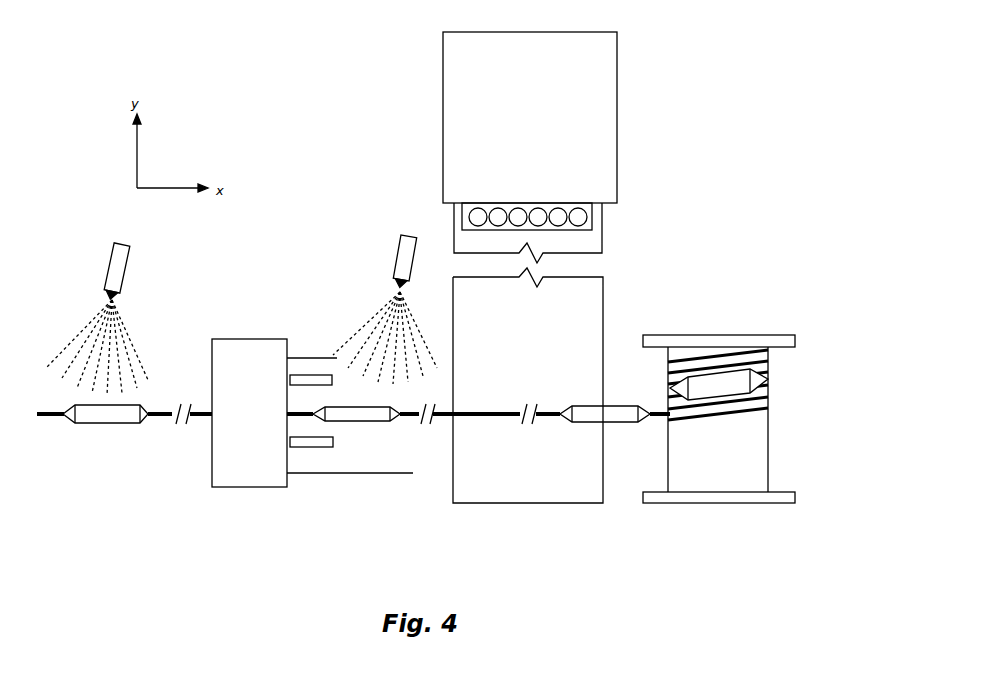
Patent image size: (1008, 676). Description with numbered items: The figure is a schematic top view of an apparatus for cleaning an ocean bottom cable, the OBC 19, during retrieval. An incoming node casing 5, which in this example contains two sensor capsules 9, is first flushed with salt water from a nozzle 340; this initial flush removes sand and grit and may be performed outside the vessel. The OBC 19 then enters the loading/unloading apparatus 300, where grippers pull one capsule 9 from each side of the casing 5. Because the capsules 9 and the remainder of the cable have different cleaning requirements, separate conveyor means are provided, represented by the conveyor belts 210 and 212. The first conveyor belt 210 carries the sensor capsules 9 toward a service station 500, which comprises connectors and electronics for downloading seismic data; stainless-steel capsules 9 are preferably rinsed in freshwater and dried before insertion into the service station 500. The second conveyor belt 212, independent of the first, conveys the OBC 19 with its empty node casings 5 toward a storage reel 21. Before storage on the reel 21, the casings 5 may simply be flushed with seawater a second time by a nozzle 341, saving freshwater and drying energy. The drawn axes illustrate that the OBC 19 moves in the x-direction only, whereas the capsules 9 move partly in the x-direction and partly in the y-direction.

The OBC 19 is at (50, 417).
The node casing 5 is at (104, 421).
The nozzle 340 is at (106, 281).
The nozzle 341 is at (393, 264).
The loading/unloading apparatus 300 is at (441, 413).
The conveyor belt 210 is at (312, 356).
The sensor capsule 9 is at (311, 448).
The service station 500 is at (530, 147).
The conveyor belt 212 is at (482, 493).
The reel 21 is at (675, 333).